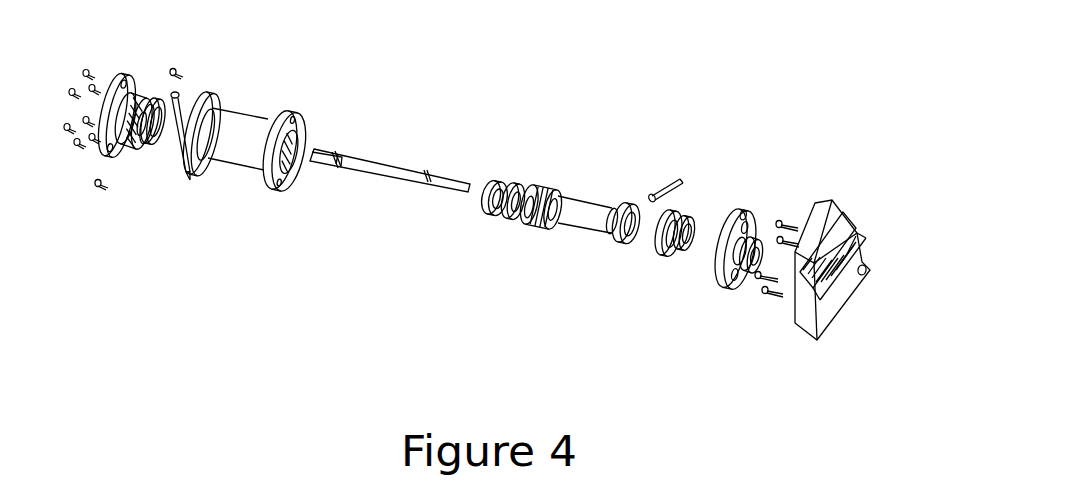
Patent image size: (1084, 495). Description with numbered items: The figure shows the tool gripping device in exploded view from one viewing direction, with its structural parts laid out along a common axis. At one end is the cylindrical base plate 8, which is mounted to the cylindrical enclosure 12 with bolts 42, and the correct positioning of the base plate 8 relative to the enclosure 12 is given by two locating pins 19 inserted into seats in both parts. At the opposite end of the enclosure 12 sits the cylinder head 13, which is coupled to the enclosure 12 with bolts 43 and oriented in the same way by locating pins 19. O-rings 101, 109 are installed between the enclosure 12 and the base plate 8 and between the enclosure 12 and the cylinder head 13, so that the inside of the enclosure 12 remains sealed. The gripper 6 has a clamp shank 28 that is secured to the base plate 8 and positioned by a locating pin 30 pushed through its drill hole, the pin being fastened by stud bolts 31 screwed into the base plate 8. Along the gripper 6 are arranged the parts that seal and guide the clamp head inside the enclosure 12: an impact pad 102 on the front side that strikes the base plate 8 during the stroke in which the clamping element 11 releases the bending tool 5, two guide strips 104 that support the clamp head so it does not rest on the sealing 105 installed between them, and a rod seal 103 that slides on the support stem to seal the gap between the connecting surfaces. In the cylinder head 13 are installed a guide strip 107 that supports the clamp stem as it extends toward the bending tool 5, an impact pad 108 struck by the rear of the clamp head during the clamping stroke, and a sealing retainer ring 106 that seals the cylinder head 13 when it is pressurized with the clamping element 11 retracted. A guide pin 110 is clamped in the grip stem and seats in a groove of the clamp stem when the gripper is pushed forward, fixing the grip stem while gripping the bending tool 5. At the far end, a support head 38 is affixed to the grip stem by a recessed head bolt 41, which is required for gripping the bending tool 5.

The bending tool 5 is at (840, 208).
The gripper 6 is at (357, 162).
The base plate 8 is at (106, 152).
The clamping element 11 is at (580, 196).
The cylindrical enclosure 12 is at (252, 112).
The cylinder head 13 is at (720, 283).
The locating pins 19 is at (184, 125).
The clamp shank 28 is at (336, 164).
The locating pin 30 is at (152, 92).
The stud bolts 31 is at (178, 70).
The support head 38 is at (866, 269).
The recessed head bolt 41 is at (896, 285).
The bolts 42 is at (90, 72).
The bolts 43 is at (770, 300).
The O-ring 101 is at (150, 140).
The impact pad 102 is at (492, 186).
The rod seal 103 is at (528, 218).
The guide strips 104 is at (508, 186).
The sealing 105 is at (510, 212).
The sealing retainer ring 106 is at (766, 238).
The guide strip 107 is at (722, 204).
The impact pad 108 is at (682, 256).
The O-ring 109 is at (652, 246).
The guide pin 110 is at (427, 166).